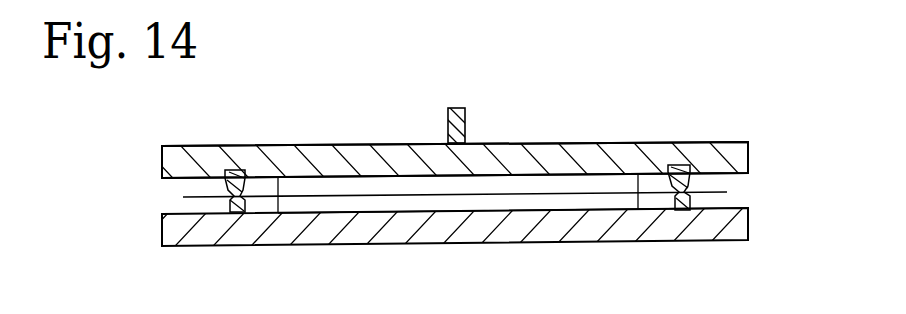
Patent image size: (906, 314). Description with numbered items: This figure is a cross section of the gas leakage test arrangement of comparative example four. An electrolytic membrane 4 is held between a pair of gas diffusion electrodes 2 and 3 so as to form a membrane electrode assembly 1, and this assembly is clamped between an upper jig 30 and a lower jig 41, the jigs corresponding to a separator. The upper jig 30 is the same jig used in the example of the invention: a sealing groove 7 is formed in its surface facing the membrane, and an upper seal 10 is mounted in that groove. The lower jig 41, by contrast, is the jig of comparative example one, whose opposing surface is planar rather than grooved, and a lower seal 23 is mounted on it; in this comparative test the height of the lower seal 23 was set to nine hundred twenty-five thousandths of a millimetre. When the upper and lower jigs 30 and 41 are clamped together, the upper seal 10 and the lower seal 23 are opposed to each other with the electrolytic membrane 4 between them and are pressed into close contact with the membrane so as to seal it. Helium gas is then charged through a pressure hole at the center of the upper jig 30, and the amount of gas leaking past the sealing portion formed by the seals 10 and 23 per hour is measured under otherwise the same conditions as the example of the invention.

The membrane electrode assembly 1 is at (340, 176).
The gas diffusion electrode 2 is at (483, 183).
The gas diffusion electrode 3 is at (430, 202).
The electrolytic membrane 4 is at (520, 196).
The sealing groove 7 is at (238, 172).
The seal 10 is at (695, 180).
The lower seal 23 is at (690, 200).
The upper jig 30 is at (582, 142).
The lower jig 41 is at (312, 246).